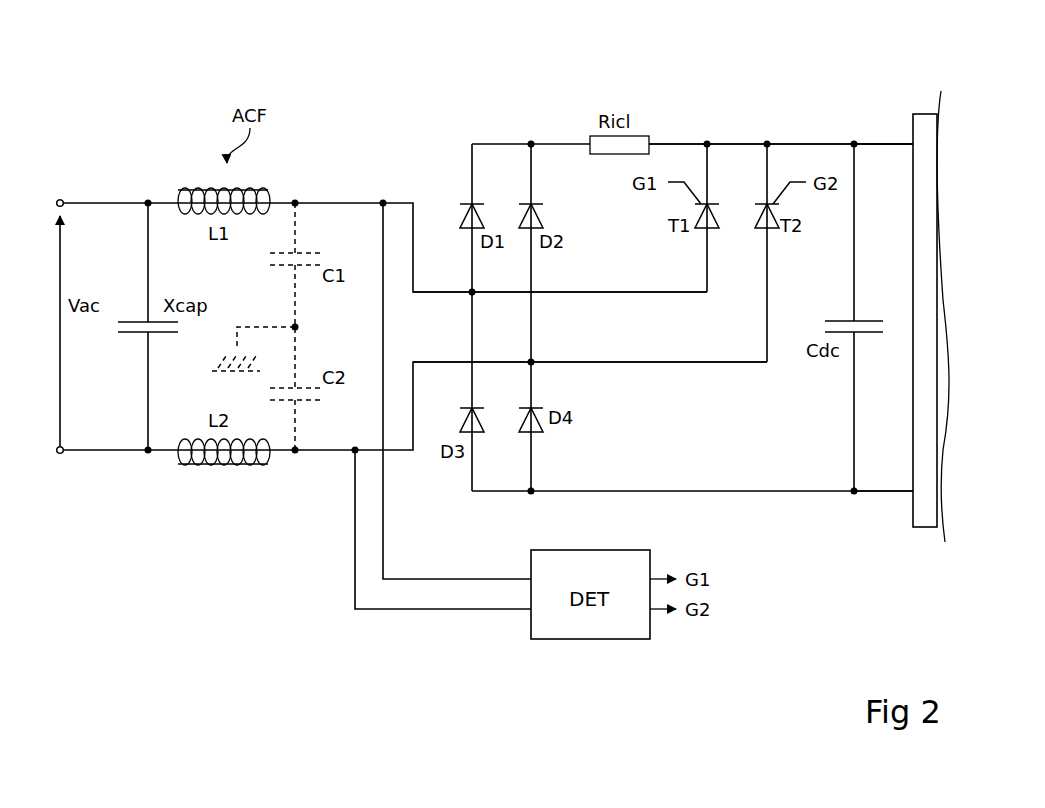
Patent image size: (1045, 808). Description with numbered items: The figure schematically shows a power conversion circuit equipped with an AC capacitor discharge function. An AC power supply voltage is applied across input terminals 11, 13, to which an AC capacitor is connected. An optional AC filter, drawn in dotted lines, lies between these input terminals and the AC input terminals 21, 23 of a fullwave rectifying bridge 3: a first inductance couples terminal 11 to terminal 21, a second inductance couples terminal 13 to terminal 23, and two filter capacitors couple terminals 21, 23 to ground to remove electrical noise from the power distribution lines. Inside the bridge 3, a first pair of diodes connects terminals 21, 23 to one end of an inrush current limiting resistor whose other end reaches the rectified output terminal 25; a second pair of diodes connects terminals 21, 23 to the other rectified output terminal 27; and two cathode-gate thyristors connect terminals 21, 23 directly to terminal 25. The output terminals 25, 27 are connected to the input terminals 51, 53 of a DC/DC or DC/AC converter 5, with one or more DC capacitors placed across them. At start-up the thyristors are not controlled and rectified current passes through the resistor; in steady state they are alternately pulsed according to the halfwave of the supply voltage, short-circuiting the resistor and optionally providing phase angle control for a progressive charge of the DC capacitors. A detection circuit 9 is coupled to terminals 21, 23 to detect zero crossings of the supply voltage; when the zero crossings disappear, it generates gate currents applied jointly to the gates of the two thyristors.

The rectifying bridge 3 is at (540, 92).
The DC/DC or DC/AC converter 5 is at (931, 528).
The circuit (DET) 9 is at (619, 640).
The input terminal 11 is at (60, 202).
The input terminal 13 is at (60, 453).
The AC input terminal 21 is at (472, 292).
The AC input terminal 23 is at (531, 362).
The rectified output terminal 25 is at (813, 144).
The rectified output terminal 27 is at (768, 492).
The input terminal 51 is at (912, 144).
The input terminal 53 is at (911, 492).